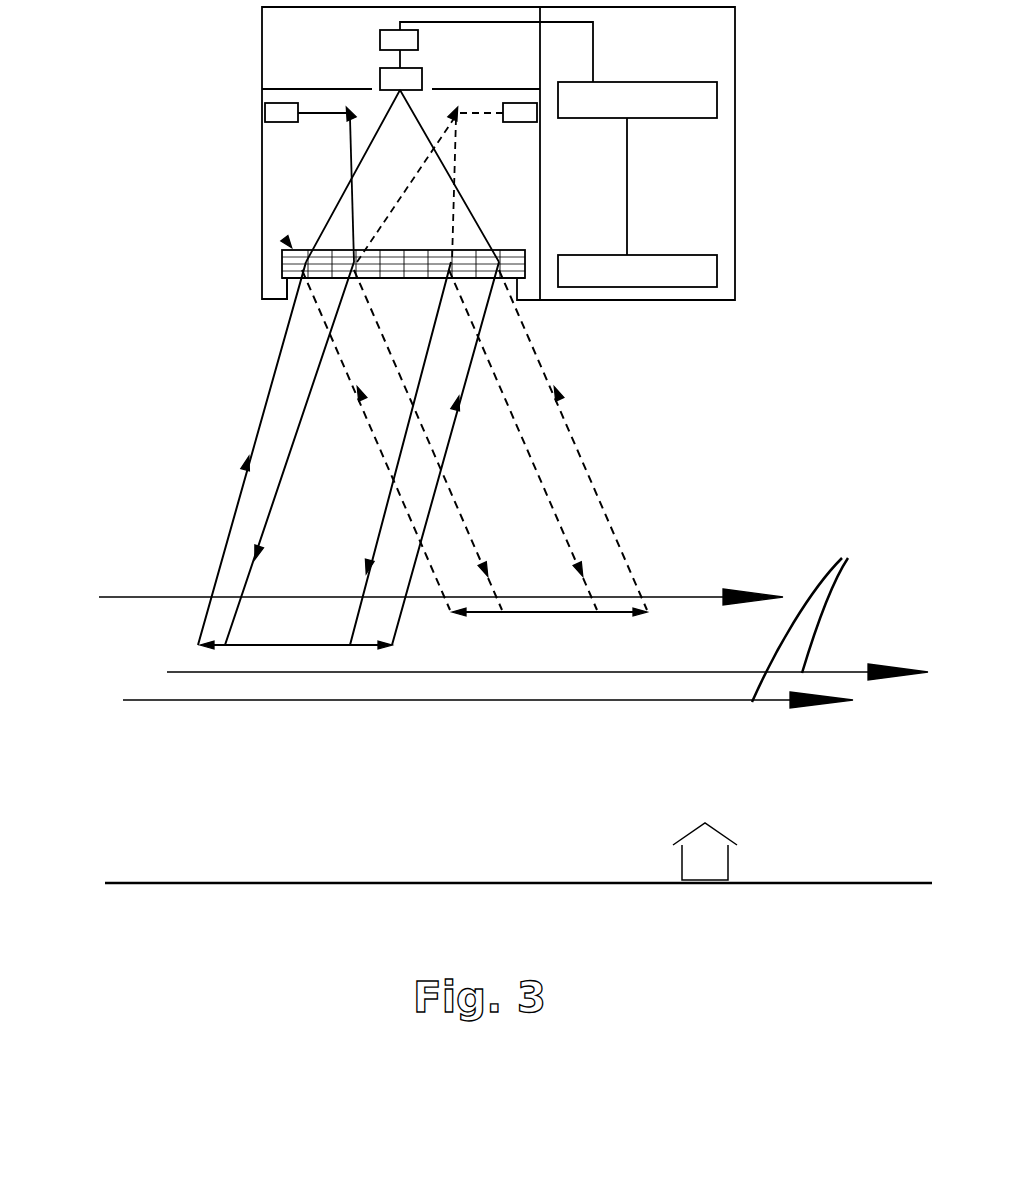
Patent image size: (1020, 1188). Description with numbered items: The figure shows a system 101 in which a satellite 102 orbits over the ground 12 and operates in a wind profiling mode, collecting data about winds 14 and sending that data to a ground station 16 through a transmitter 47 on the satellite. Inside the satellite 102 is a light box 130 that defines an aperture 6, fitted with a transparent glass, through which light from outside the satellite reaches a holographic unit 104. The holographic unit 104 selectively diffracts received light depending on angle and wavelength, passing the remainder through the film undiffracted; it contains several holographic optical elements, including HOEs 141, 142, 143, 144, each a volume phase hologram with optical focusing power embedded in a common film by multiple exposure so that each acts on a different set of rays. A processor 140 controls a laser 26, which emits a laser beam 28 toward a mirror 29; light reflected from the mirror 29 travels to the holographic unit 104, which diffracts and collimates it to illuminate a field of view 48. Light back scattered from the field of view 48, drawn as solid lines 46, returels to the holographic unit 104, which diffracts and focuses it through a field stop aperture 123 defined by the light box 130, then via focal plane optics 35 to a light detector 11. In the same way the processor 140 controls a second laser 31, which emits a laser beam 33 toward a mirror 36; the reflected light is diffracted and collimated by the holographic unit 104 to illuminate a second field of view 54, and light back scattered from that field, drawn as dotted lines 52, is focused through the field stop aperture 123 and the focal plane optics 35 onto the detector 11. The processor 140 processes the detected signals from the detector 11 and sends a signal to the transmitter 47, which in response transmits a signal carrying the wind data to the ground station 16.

The light box 130 is at (288, 88).
The light detector 11 is at (486, 52).
The focal plane optics 35 is at (401, 70).
The processor 140 is at (637, 168).
The transmitter 47 is at (637, 271).
The laser 26 is at (281, 112).
The laser 31 is at (520, 112).
The laser beam 28 is at (308, 115).
The mirror 29 is at (347, 107).
The laser beam 33 is at (494, 116).
The mirror 36 is at (452, 116).
The field stop aperture 123 is at (401, 91).
The holographic unit 104 is at (285, 238).
The HOE 141 is at (283, 262).
The HOE 142 is at (368, 264).
The HOE 143 is at (416, 264).
The HOE 144 is at (464, 264).
The satellite 102 is at (273, 301).
The aperture 6 is at (407, 292).
The back scattered laser light 46 is at (450, 440).
The field of view 48 is at (315, 645).
The back scattered laser light 52 is at (622, 548).
The field of view 54 is at (540, 612).
The winds 14 is at (700, 598).
The ground 12 is at (212, 882).
The ground station 16 is at (705, 851).
The system 101 is at (456, 931).